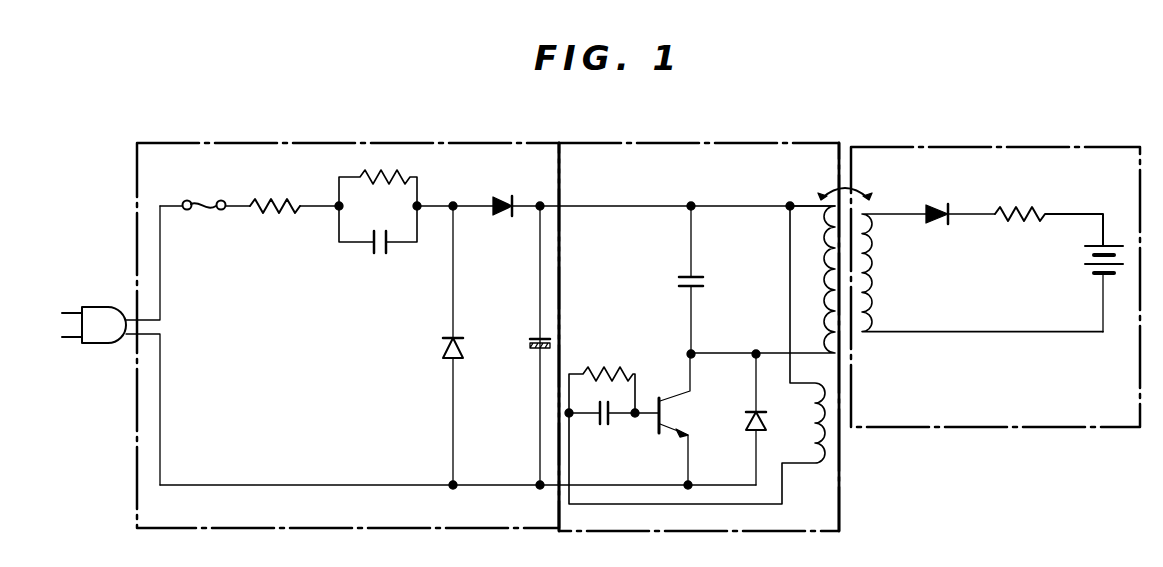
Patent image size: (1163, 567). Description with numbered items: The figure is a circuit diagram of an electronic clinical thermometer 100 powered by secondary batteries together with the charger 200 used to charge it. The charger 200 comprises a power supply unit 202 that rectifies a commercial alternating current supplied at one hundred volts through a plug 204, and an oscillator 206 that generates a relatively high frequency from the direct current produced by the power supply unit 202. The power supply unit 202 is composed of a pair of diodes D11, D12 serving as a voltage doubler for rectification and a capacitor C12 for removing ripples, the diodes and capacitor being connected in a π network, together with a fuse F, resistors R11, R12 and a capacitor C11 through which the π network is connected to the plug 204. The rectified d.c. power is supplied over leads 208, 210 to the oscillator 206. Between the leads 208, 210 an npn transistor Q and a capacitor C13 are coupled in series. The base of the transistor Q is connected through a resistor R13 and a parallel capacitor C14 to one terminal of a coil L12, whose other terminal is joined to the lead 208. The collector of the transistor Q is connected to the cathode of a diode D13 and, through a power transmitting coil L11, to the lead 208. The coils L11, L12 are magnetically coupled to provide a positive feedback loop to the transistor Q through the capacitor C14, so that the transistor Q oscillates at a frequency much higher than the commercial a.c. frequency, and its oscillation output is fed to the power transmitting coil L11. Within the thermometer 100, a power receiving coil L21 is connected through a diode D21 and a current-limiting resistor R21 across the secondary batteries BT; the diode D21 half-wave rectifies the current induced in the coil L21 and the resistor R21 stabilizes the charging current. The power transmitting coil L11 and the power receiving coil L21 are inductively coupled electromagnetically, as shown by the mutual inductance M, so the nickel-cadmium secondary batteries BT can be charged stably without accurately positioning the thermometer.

The electronic clinical thermometer 100 is at (982, 146).
The charger 200 is at (520, 133).
The power supply unit 202 is at (332, 141).
The plug 204 is at (112, 344).
The oscillator 206 is at (668, 143).
The lead 208 is at (618, 205).
The lead 210 is at (548, 490).
The fuse F is at (210, 200).
The resistor R11 is at (285, 200).
The resistor R12 is at (388, 166).
The capacitor C11 is at (384, 230).
The diode D12 is at (504, 197).
The diode D11 is at (442, 347).
The capacitor C12 is at (524, 341).
The capacitor C13 is at (673, 279).
The resistor R13 is at (606, 368).
The capacitor C14 is at (606, 430).
The npn transistor Q is at (672, 390).
The diode D13 is at (734, 420).
The power transmitting coil L11 is at (812, 290).
The coil L12 is at (806, 418).
The mutual inductance M is at (845, 179).
The power receiving coil L21 is at (890, 266).
The diode D21 is at (940, 205).
The current-limiting resistor R21 is at (1015, 205).
The secondary batteries BT is at (1082, 259).